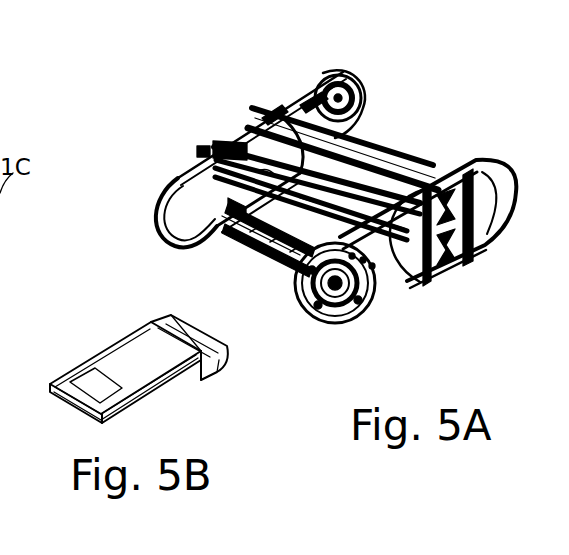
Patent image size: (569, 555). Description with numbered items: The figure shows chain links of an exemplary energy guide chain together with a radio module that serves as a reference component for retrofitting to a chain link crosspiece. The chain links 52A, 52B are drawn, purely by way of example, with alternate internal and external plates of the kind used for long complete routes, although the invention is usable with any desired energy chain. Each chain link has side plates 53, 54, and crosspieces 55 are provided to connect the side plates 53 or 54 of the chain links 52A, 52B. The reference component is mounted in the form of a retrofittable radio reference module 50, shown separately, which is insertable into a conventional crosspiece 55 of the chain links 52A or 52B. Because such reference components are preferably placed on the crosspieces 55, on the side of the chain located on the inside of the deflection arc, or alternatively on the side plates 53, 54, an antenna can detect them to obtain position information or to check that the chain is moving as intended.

In FIG. 5A, the radio reference module 50 is at (273, 263).
In FIG. 5B, the radio reference module 50 is at (131, 355).
In FIG. 5A, the chain link 52A is at (205, 129).
In FIG. 5A, the chain link 52B is at (278, 97).
In FIG. 5A, the side plate 53 is at (176, 178).
In FIG. 5A, the side plate 54 is at (326, 74).
In FIG. 5A, the crosspiece 55 is at (230, 243).